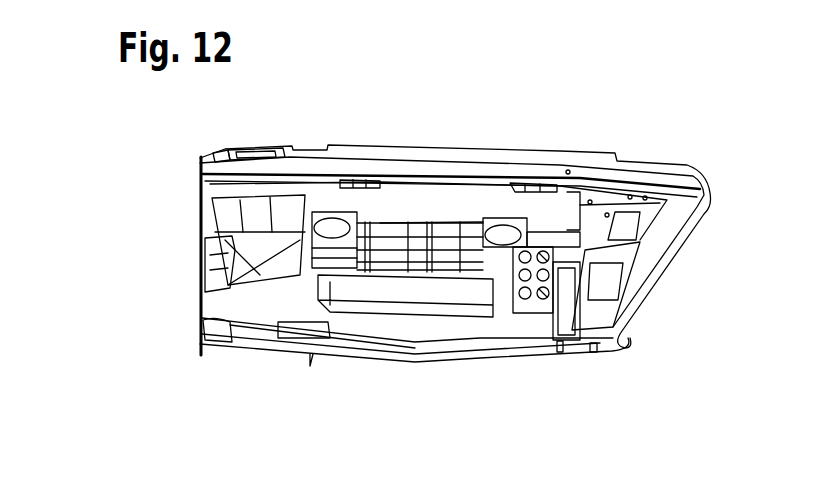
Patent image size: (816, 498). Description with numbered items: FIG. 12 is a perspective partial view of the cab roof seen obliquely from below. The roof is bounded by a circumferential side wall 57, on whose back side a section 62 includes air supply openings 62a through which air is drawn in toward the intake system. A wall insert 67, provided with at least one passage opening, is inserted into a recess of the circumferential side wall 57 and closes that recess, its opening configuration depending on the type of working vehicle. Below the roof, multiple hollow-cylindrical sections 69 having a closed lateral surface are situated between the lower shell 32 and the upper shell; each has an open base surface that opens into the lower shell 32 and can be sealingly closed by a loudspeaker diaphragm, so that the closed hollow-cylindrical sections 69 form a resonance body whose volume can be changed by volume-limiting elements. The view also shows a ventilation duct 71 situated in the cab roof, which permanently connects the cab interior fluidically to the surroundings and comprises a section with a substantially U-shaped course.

The circumferential side wall 57 is at (688, 170).
The wall insert 67 is at (583, 177).
The section 62 is at (288, 152).
The air supply openings 62a is at (241, 152).
The hollow-cylindrical sections 69 is at (300, 230).
The lower shell 32 is at (613, 312).
The ventilation duct 71 is at (560, 345).